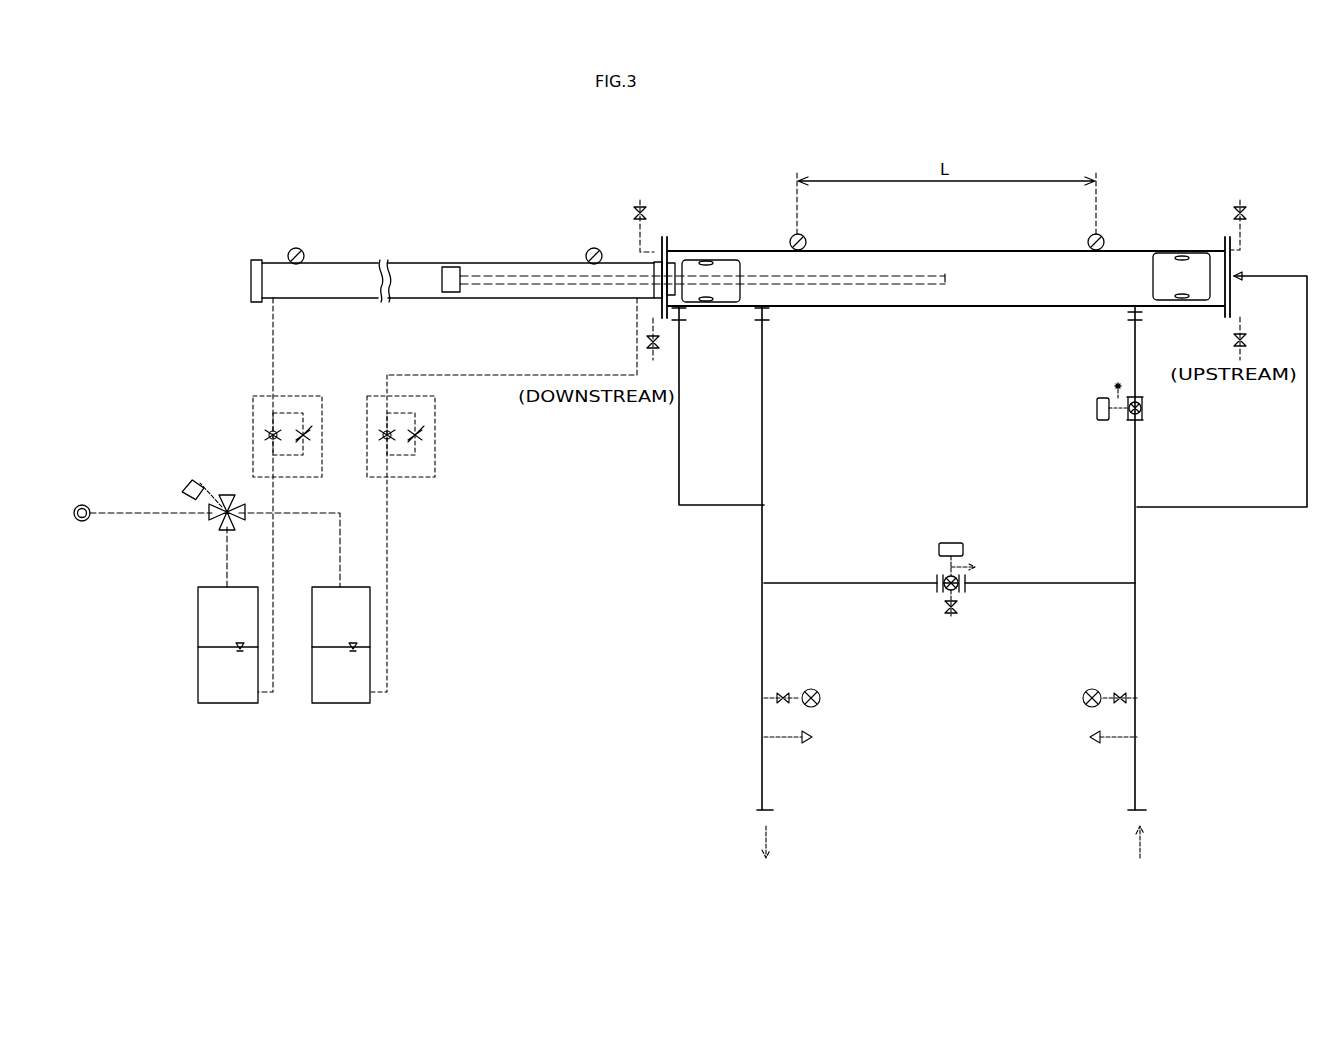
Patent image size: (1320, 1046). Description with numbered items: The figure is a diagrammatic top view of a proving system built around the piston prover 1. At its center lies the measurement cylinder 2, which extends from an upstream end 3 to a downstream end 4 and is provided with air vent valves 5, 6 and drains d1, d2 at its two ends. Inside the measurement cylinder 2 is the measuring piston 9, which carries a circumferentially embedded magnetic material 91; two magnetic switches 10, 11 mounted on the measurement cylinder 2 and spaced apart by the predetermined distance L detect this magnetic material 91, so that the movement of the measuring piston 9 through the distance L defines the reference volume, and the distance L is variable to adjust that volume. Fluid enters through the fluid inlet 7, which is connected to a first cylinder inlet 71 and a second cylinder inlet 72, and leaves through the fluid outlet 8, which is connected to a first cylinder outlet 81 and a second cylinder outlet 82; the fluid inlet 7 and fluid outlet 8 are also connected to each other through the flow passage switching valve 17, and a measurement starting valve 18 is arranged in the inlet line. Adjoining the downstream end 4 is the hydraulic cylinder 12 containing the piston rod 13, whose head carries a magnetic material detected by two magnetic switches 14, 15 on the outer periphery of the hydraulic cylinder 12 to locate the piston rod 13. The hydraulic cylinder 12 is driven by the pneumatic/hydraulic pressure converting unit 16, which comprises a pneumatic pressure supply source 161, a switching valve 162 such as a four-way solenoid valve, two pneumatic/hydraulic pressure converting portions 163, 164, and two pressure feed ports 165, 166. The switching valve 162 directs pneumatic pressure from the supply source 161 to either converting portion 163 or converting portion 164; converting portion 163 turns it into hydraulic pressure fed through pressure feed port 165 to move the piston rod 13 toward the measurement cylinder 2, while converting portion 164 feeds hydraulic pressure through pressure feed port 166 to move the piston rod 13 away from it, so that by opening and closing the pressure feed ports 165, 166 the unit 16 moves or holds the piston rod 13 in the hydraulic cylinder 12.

The piston prover 1 is at (730, 168).
The measurement cylinder 2 is at (937, 307).
The upstream end 3 is at (1232, 256).
The downstream end 4 is at (660, 242).
The air vent valve 5 is at (1244, 200).
The air vent valve 6 is at (618, 196).
The fluid inlet 7 is at (1140, 813).
The fluid outlet 8 is at (771, 813).
The measuring piston 9 is at (1181, 277).
The magnetic switch 10 is at (1101, 238).
The magnetic switch 11 is at (803, 238).
The hydraulic cylinder 12 is at (424, 263).
The piston rod 13 is at (554, 299).
The magnetic switch 14 is at (589, 250).
The magnetic switch 15 is at (290, 251).
The pneumatic/hydraulic pressure converting unit 16 is at (247, 622).
The flow passage switching valve 17 is at (944, 580).
The measurement starting valve 18 is at (1140, 415).
The first cylinder inlet 71 is at (1238, 280).
The second cylinder inlet 72 is at (1131, 315).
The first cylinder outlet 81 is at (684, 315).
The second cylinder outlet 82 is at (767, 315).
The magnetic material 91 is at (1186, 290).
The pneumatic pressure supply source 161 is at (82, 504).
The switching valve 162 is at (247, 462).
The pneumatic/hydraulic pressure converting portion 163 is at (207, 586).
The pneumatic/hydraulic pressure converting portion 164 is at (321, 586).
The pressure feed port 165 is at (272, 299).
The pressure feed port 166 is at (633, 299).
The drain valve d1 is at (1242, 328).
The drain valve d2 is at (657, 336).